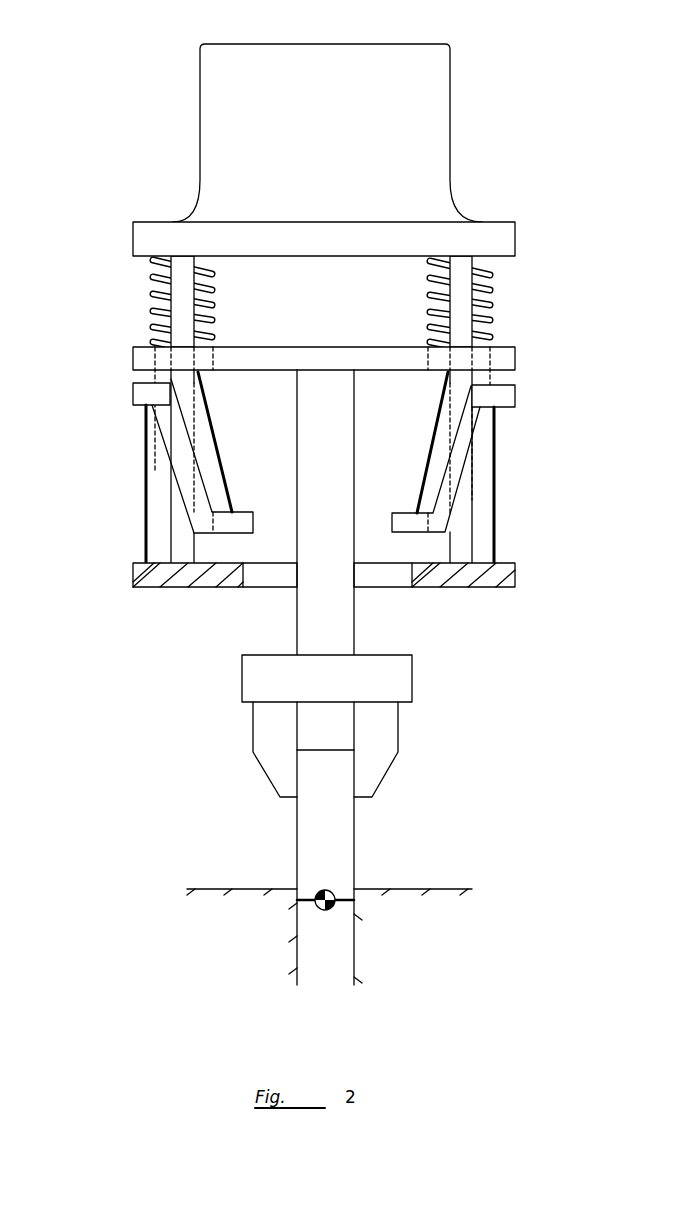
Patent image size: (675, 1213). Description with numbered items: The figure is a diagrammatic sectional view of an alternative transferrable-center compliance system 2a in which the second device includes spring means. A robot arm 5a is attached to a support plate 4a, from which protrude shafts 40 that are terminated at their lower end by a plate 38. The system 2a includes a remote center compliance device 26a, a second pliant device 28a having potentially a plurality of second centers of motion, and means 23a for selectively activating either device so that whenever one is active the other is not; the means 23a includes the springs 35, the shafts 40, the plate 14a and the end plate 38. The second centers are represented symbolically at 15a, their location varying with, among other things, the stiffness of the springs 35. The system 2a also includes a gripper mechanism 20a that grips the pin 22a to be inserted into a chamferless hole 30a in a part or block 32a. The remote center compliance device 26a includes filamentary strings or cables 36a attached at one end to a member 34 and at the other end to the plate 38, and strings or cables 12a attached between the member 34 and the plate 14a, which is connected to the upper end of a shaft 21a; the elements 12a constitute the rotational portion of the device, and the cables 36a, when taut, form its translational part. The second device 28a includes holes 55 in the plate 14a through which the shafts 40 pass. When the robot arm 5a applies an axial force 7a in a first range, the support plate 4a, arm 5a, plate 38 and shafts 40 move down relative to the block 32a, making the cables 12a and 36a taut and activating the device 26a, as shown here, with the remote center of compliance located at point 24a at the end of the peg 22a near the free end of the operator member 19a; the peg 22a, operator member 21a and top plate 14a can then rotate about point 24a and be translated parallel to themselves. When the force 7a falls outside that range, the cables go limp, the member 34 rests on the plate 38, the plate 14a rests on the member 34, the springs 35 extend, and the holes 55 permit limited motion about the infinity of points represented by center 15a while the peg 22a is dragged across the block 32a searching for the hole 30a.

The transferrable-center compliance system 2a is at (150, 90).
The robot arm 5a is at (438, 88).
The support plate 4a is at (143, 223).
The means for selectively activating 23a is at (120, 287).
The springs 35 is at (215, 285).
The second pliant device 28a is at (136, 330).
The second center of motion 15a is at (199, 353).
The plate 14a is at (402, 347).
The holes 55 is at (215, 357).
The shafts 40 is at (196, 427).
The strings or cables 12a is at (220, 460).
The member 34 is at (173, 477).
The filamentary elements, strings or cables 36a is at (146, 545).
The remote center compliance device 26a is at (514, 504).
The plate 38 is at (195, 588).
The shaft 21a is at (354, 600).
The operator member 19a is at (430, 645).
The gripper mechanism 20a is at (400, 728).
The axial force 7a is at (241, 727).
The pin or peg 22a is at (354, 817).
The remote center of compliance point 24a is at (331, 891).
The part or block 32a is at (447, 887).
The chamferless hole 30a is at (362, 917).